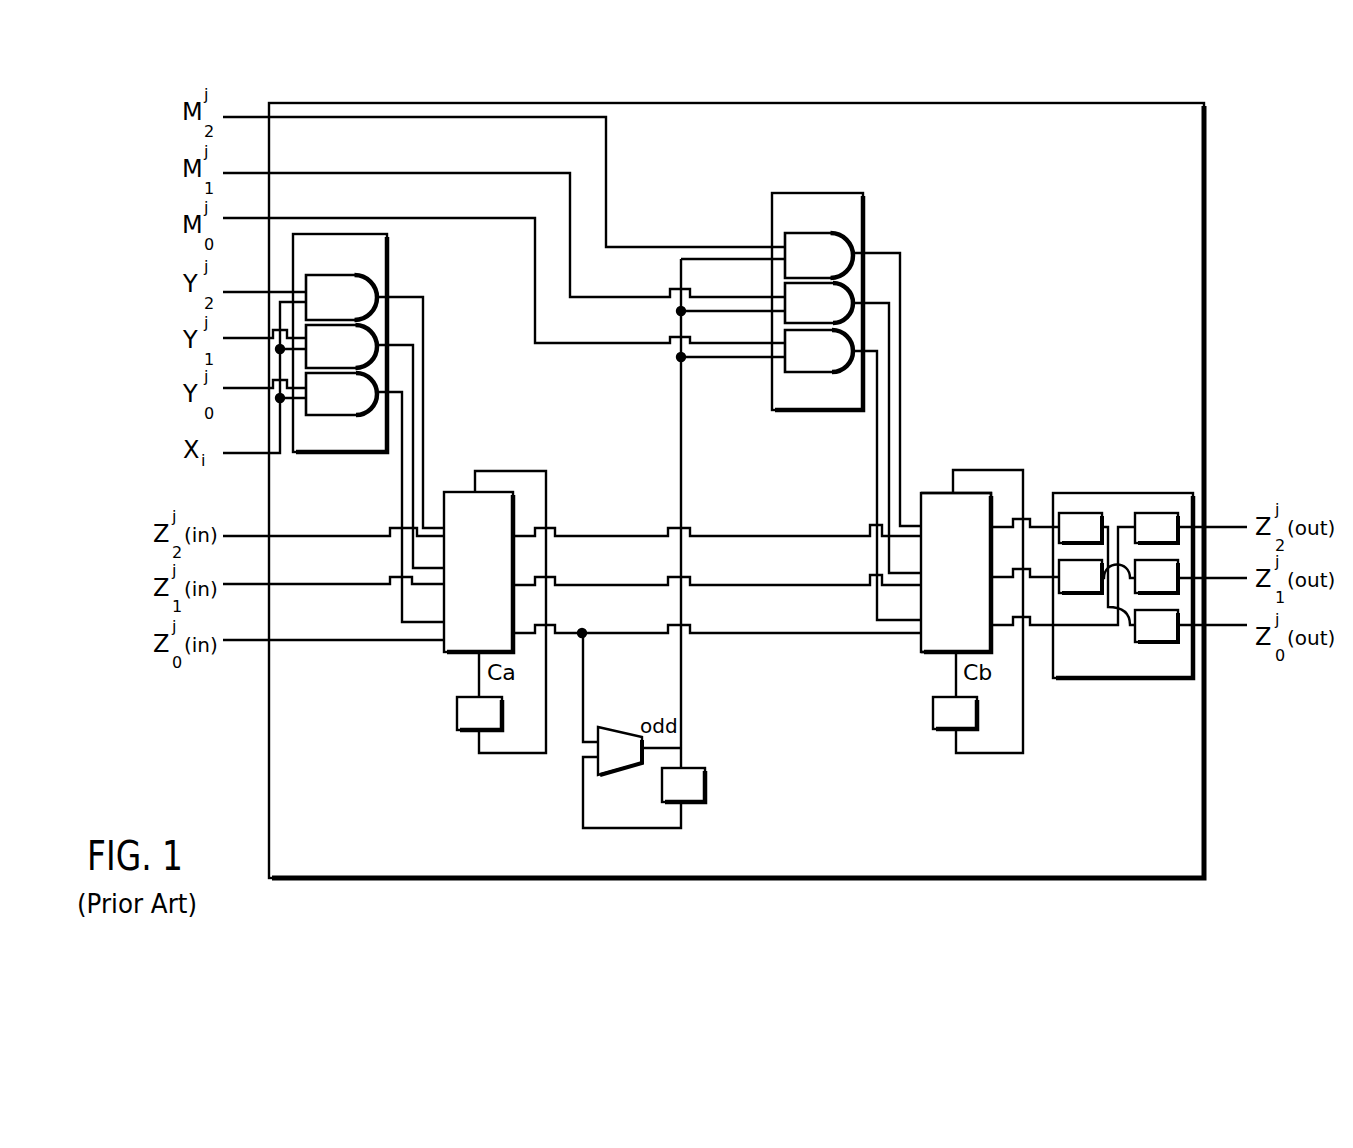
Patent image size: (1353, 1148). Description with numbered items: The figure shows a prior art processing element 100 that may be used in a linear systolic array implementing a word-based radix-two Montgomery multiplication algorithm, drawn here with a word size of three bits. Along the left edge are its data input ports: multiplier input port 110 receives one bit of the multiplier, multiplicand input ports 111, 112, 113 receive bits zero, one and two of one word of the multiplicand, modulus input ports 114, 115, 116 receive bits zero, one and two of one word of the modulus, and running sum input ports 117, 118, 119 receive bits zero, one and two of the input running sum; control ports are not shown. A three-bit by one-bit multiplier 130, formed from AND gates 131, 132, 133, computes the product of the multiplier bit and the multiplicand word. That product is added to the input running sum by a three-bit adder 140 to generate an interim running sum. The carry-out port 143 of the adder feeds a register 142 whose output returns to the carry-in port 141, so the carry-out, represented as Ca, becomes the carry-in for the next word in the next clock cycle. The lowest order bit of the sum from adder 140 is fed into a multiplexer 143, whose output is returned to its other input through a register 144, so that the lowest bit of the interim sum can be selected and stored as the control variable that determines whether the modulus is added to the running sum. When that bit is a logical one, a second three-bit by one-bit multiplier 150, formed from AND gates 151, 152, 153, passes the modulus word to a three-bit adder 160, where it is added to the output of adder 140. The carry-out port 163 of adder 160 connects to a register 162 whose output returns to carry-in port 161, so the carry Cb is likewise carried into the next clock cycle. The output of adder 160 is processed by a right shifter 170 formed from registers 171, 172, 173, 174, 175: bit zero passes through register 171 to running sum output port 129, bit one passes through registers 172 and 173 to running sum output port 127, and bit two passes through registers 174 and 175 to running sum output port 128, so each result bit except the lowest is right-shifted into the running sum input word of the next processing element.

The processing element 100 is at (736, 490).
The multiplier input port 110 is at (264, 377).
The multiplicand input port 111 is at (264, 376).
The multiplicand input port 112 is at (264, 326).
The multiplicand input port 113 is at (264, 280).
The modulus input port 114 is at (504, 268).
The modulus input port 115 is at (504, 223).
The modulus input port 116 is at (504, 170).
The running sum input port 117 is at (333, 626).
The running sum input port 118 is at (333, 570).
The running sum input port 119 is at (333, 522).
The running sum output port 127 is at (1212, 613).
The running sum output port 128 is at (1212, 566).
The running sum output port 129 is at (1212, 515).
The three-bit by one-bit multiplier 130 is at (340, 343).
The AND gate 131 is at (341, 394).
The AND gate 132 is at (341, 346).
The AND gate 133 is at (341, 297).
The three-bit adder 140 is at (445, 498).
The carry-in port 141 is at (436, 519).
The register 142 is at (479, 713).
The carry-out port / multiplexer 143 is at (509, 536).
The register 144 is at (683, 785).
The three-bit by one-bit multiplier 150 is at (817, 301).
The AND gate 151 is at (853, 475).
The AND gate 152 is at (853, 428).
The AND gate 153 is at (853, 379).
The three-bit adder 160 is at (956, 572).
The carry-in port 161 is at (956, 631).
The register 162 is at (955, 713).
The carry-out port 163 is at (956, 516).
The right shifter 170 is at (1123, 585).
The register 171 is at (1156, 528).
The register 172 is at (1080, 576).
The register 173 is at (1156, 626).
The register 174 is at (1080, 528).
The register 175 is at (1156, 576).